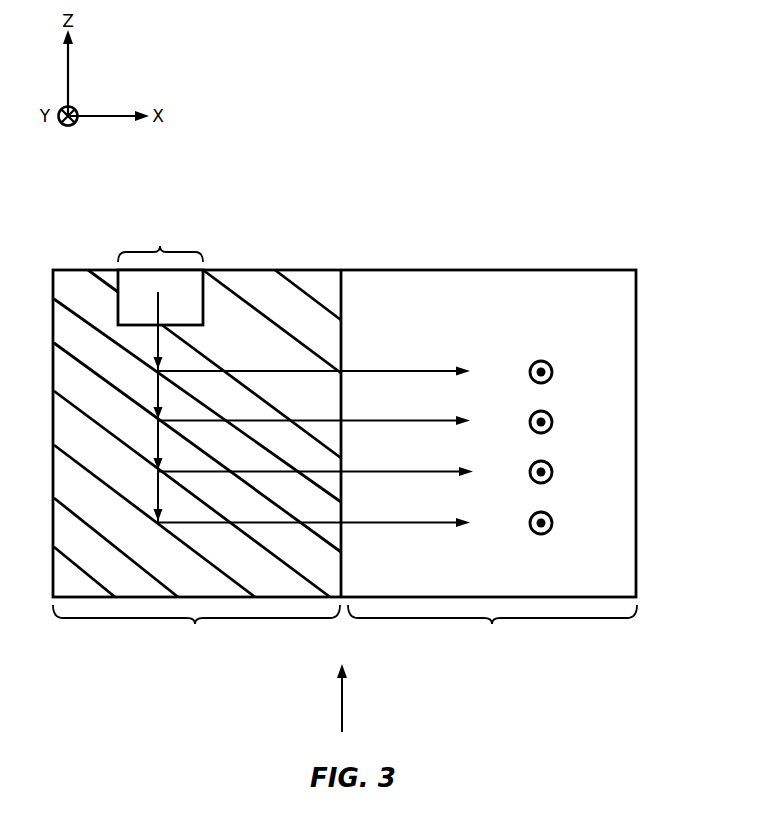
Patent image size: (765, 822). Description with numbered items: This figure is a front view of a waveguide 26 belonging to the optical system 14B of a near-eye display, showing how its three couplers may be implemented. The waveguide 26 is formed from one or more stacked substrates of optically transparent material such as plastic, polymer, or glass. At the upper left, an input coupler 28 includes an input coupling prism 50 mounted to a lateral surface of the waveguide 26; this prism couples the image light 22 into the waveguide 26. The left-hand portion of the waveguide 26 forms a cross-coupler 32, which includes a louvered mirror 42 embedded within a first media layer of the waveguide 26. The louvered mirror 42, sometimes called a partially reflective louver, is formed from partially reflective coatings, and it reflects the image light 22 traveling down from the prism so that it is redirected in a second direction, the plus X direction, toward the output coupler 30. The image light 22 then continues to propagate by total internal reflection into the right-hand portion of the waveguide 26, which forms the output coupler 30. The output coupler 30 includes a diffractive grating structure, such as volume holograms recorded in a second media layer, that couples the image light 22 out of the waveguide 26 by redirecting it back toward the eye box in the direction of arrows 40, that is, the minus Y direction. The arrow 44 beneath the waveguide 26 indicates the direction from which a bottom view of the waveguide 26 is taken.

The optical system 14B is at (346, 371).
The waveguide 26 is at (650, 360).
The louvered mirror 42 is at (228, 287).
The input coupling prism 50 is at (131, 280).
The input coupler 28 is at (160, 241).
The image light 22 is at (376, 372).
The arrows 40 is at (553, 374).
The cross-coupler 32 is at (196, 628).
The output coupler 30 is at (492, 631).
The arrow 44 is at (343, 700).